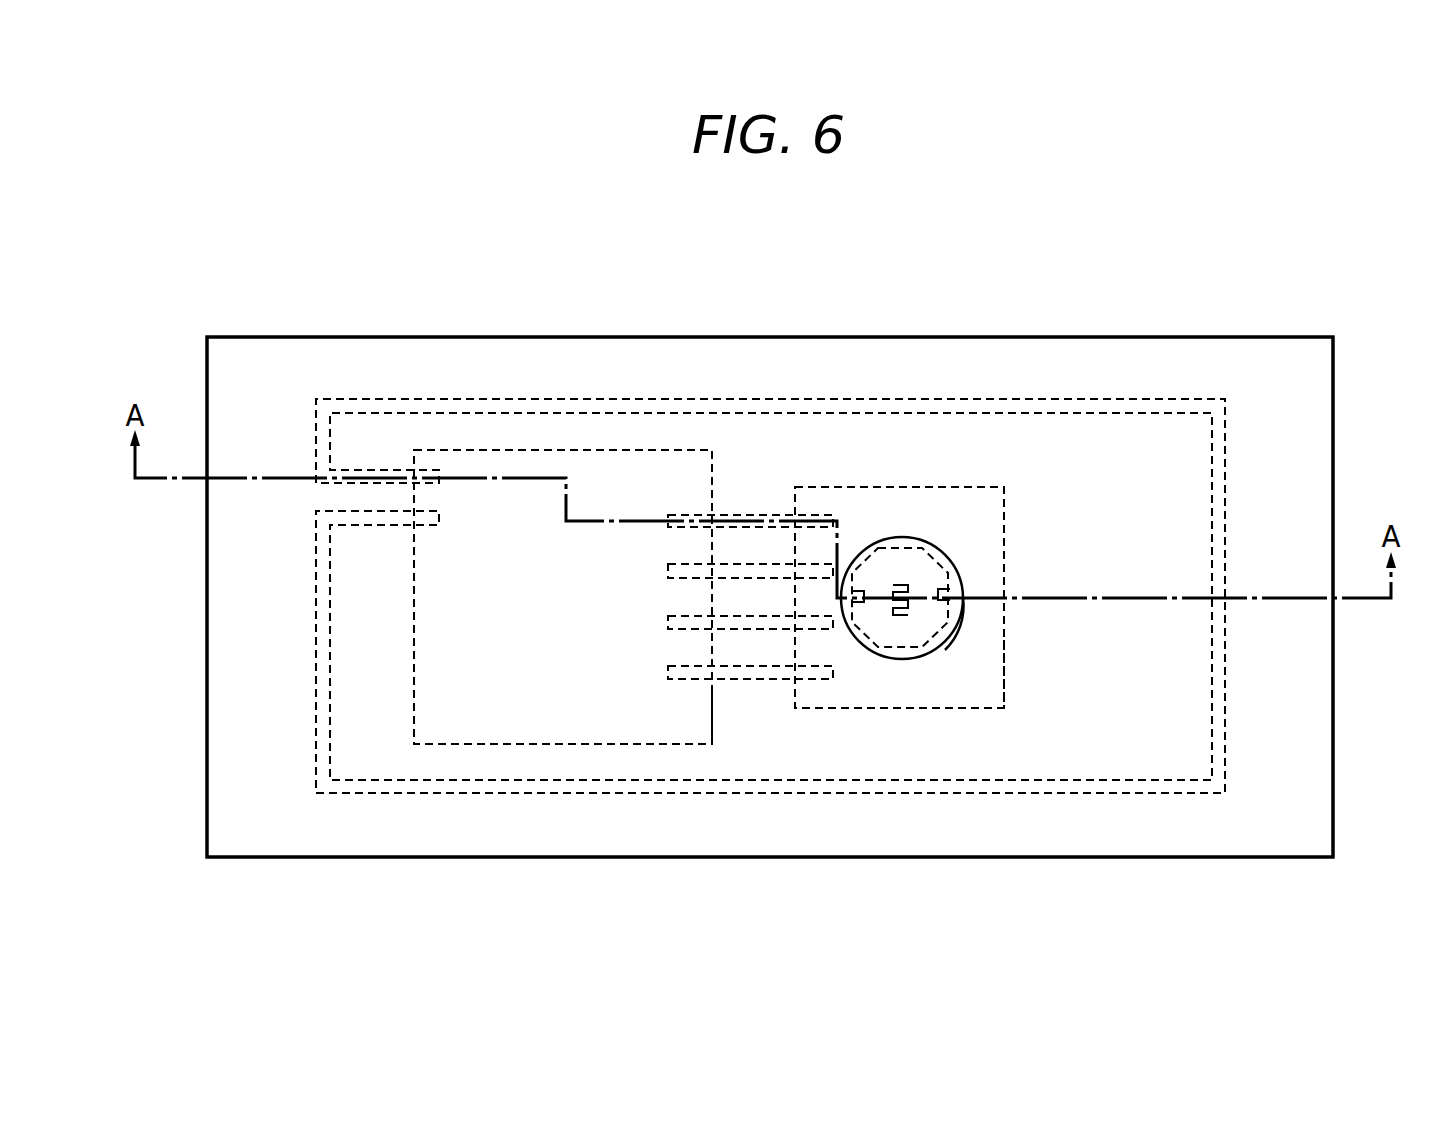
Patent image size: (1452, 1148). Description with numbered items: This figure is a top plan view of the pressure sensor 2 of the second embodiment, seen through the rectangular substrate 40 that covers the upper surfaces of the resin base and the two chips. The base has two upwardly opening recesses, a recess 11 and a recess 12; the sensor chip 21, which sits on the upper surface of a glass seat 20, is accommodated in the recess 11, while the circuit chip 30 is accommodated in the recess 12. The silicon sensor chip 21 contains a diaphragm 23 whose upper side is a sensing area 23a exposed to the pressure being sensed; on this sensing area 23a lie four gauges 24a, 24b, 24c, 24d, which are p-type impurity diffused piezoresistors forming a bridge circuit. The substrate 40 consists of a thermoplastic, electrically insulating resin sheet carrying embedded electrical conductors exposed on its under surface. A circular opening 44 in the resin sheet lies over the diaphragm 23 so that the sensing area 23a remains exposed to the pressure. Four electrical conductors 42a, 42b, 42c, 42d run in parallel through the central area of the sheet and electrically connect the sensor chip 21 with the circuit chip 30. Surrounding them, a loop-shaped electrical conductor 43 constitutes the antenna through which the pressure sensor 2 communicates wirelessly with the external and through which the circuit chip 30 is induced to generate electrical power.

The pressure sensor 2 is at (544, 310).
The substrate 40 is at (1333, 787).
The electrical conductor 43 is at (907, 398).
The circuit chip 30 is at (660, 450).
The recess 12 is at (712, 714).
The sensor chip 21 is at (1005, 497).
The glass seat 20 is at (899, 597).
The recess 11 is at (1004, 668).
The electrical conductor 42a is at (765, 513).
The electrical conductor 42b is at (747, 563).
The electrical conductor 42c is at (747, 612).
The electrical conductor 42d is at (747, 662).
The diaphragm 23 is at (942, 647).
The sensing area 23a is at (880, 630).
The circular opening 44 is at (958, 606).
The gauge 24a is at (858, 591).
The gauge 24b is at (900, 585).
The gauge 24c is at (945, 589).
The gauge 24d is at (900, 615).